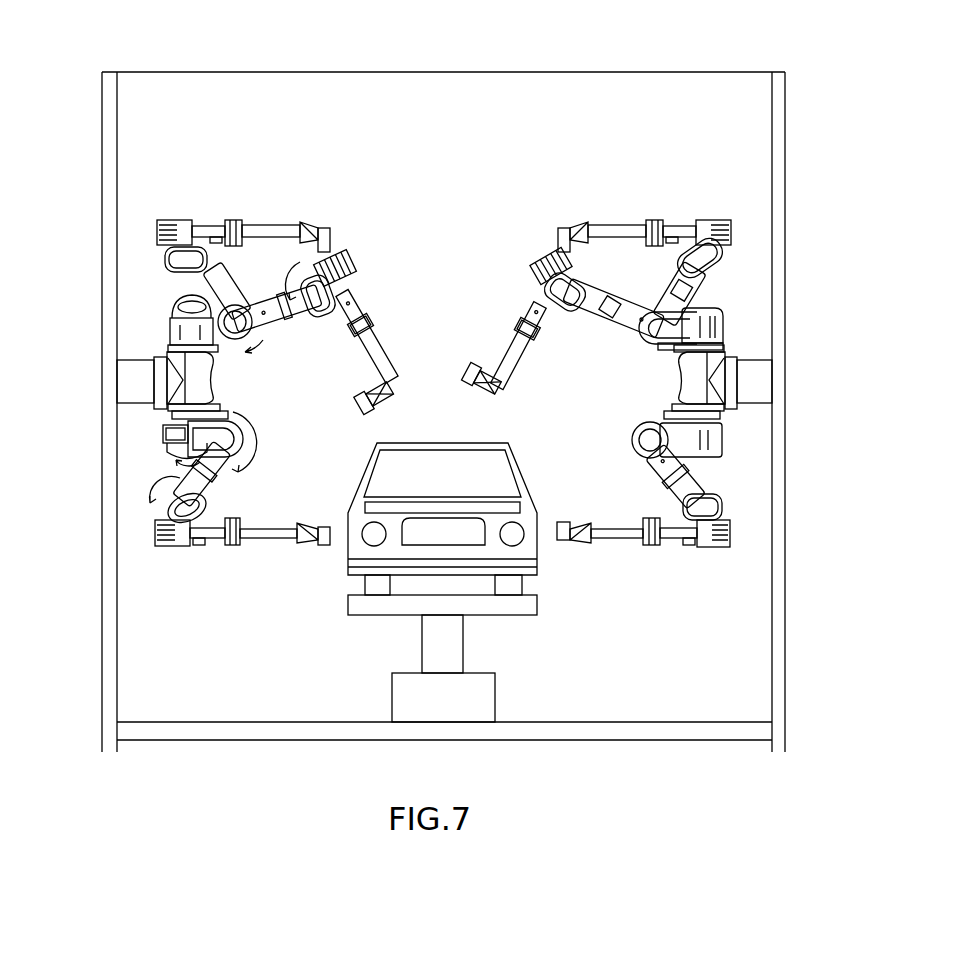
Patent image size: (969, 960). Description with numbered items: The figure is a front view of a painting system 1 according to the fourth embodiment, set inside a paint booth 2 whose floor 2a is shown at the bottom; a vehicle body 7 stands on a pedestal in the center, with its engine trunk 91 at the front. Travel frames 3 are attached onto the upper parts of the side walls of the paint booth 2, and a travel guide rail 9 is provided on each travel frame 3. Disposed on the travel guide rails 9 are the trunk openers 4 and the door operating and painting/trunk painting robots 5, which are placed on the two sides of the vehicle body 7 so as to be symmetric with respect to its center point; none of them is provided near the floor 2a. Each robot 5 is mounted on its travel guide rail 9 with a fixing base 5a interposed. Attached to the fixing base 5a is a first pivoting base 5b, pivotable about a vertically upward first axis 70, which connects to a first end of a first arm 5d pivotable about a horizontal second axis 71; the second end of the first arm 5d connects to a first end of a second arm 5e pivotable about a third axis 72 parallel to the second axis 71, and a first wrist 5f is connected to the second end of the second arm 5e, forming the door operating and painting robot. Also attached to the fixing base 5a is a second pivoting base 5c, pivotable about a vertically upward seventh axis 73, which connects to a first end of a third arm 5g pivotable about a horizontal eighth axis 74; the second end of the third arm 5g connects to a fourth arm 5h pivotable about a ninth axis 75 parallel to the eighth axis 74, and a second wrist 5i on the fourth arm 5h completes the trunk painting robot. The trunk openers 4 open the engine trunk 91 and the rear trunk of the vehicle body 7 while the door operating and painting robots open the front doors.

The painting system 1 is at (430, 103).
The paint booth 2 is at (778, 170).
The floor 2a is at (588, 735).
The travel frame 3 is at (133, 385).
The trunk opener 4 is at (262, 224).
The door operating and painting/trunk painting robot 5 is at (183, 380).
The fixing base 5a is at (173, 366).
The first pivoting base 5b is at (168, 316).
The second pivoting base 5c is at (180, 427).
The first arm 5d is at (268, 295).
The second arm 5e is at (376, 345).
The first wrist 5f is at (397, 392).
The third arm 5g is at (222, 458).
The fourth arm 5h is at (215, 548).
The second wrist 5i is at (300, 545).
The vehicle body 7 is at (467, 494).
The travel guide rail 9 is at (156, 362).
The first axis 70 is at (184, 312).
The second axis 71 is at (259, 315).
The third axis 72 is at (327, 296).
The seventh axis 73 is at (174, 467).
The eighth axis 74 is at (259, 442).
The ninth axis 75 is at (170, 502).
The engine trunk 91 is at (512, 508).